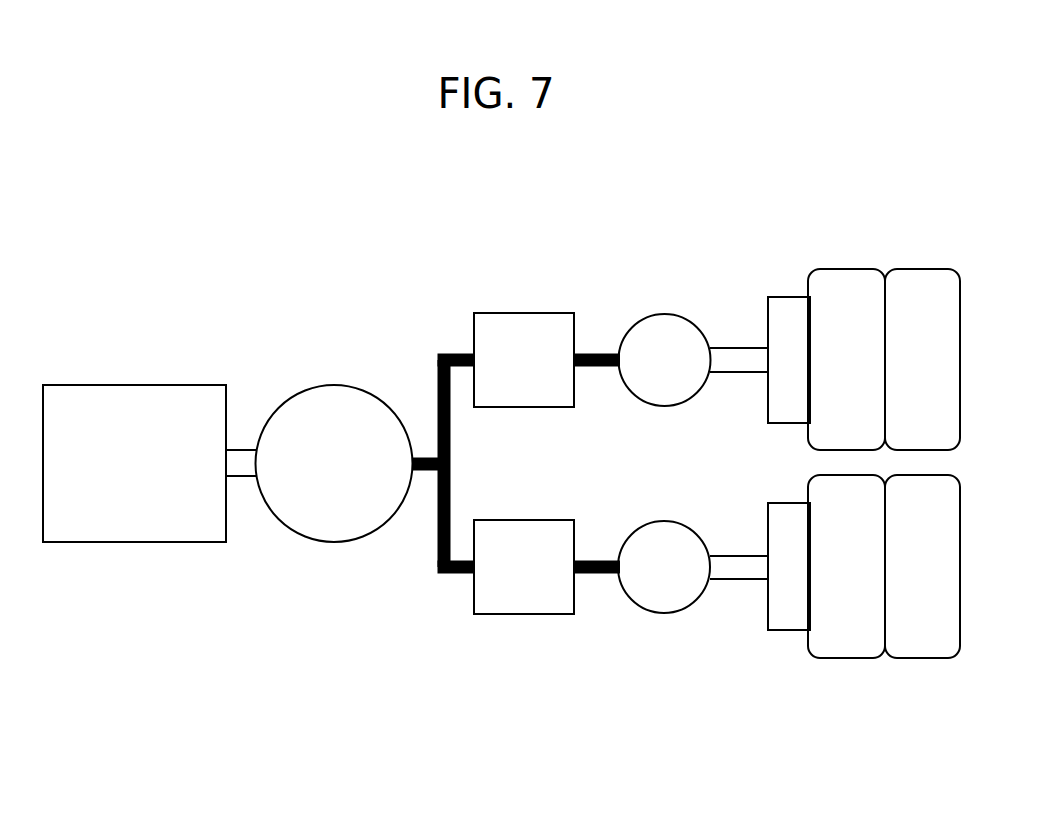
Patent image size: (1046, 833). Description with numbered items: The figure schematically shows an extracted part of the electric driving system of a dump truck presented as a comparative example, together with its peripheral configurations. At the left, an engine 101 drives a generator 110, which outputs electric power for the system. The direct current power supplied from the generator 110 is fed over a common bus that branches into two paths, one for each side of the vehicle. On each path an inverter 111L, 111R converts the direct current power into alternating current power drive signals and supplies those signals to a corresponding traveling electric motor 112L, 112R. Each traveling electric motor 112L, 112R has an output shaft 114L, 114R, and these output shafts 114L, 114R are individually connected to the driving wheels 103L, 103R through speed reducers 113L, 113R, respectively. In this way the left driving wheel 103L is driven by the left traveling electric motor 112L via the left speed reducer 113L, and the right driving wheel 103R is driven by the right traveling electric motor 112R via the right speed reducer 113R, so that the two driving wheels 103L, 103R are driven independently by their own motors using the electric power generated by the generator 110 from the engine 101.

The engine 101 is at (156, 385).
The generator 110 is at (363, 390).
The inverter 111L is at (527, 313).
The inverter 111R is at (517, 614).
The traveling electric motor 112L is at (664, 313).
The traveling electric motor 112R is at (664, 614).
The speed reducer 113L is at (790, 303).
The speed reducer 113R is at (788, 625).
The output shaft 114L is at (735, 368).
The output shaft 114R is at (735, 560).
The driving wheel 103L is at (809, 258).
The driving wheel 103R is at (809, 670).